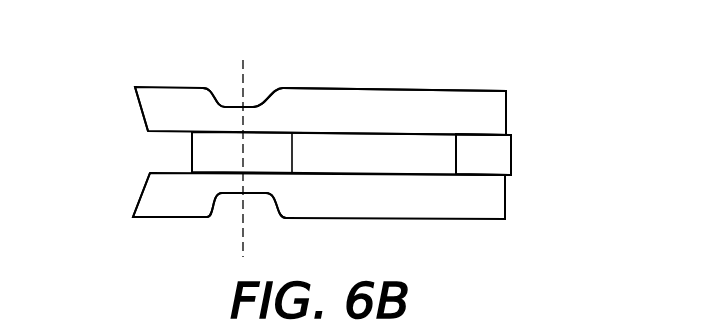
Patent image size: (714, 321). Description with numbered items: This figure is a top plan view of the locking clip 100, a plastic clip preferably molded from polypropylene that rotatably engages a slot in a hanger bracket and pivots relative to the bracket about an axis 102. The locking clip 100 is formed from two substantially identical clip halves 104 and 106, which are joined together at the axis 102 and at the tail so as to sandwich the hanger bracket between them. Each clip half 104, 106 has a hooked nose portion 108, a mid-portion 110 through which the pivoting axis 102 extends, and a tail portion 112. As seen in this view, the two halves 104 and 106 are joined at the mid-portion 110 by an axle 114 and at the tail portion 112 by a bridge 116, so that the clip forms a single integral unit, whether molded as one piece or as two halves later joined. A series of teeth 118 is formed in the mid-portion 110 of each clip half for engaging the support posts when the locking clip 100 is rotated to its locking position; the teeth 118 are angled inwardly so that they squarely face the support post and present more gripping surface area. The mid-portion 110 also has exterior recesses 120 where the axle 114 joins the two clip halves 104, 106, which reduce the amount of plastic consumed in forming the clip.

The locking clip 100 is at (326, 146).
The axis 102 is at (242, 86).
The clip half 104 is at (393, 86).
The clip half 106 is at (340, 223).
The hooked nose portion 108 is at (474, 212).
The mid-portion 110 is at (337, 105).
The tail portion 112 is at (525, 110).
The axle 114 is at (190, 154).
The bridge 116 is at (495, 162).
The teeth 118 is at (142, 113).
The exterior recesses 120 is at (262, 107).